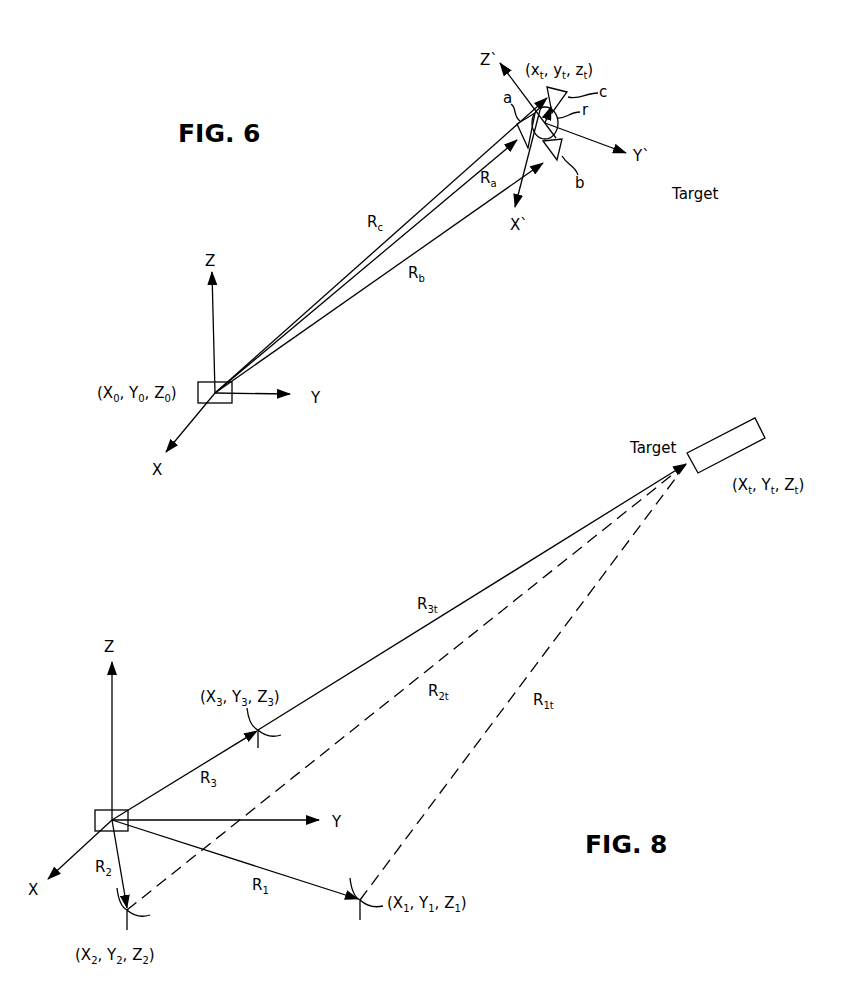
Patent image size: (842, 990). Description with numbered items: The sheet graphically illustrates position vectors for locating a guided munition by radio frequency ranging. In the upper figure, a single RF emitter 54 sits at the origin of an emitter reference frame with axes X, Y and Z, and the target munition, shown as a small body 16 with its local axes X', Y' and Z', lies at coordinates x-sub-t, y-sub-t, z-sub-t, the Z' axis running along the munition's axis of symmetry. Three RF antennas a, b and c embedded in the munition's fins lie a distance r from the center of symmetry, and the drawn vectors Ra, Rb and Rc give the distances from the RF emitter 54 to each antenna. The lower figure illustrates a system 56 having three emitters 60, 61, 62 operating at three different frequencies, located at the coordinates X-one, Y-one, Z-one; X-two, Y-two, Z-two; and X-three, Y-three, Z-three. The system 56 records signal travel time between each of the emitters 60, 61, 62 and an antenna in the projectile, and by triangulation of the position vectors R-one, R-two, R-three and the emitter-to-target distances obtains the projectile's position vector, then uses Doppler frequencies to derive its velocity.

In FIG. 6, the target 16 is at (560, 206).
In FIG. 6, the RF emitter 54 is at (216, 403).
In FIG. 8, the system 56 is at (106, 810).
In FIG. 8, the emitter 60 is at (368, 905).
In FIG. 8, the emitter 61 is at (120, 906).
In FIG. 8, the emitter 62 is at (248, 718).